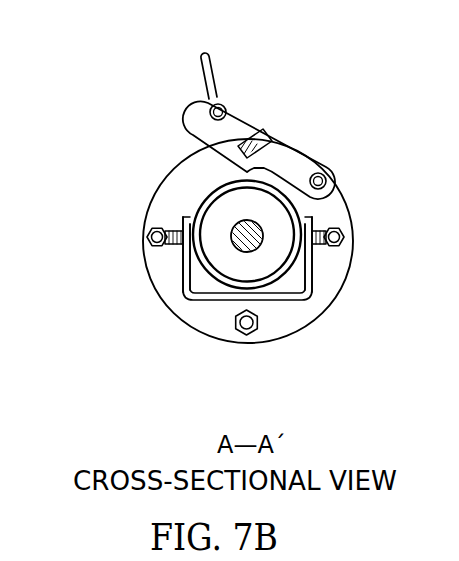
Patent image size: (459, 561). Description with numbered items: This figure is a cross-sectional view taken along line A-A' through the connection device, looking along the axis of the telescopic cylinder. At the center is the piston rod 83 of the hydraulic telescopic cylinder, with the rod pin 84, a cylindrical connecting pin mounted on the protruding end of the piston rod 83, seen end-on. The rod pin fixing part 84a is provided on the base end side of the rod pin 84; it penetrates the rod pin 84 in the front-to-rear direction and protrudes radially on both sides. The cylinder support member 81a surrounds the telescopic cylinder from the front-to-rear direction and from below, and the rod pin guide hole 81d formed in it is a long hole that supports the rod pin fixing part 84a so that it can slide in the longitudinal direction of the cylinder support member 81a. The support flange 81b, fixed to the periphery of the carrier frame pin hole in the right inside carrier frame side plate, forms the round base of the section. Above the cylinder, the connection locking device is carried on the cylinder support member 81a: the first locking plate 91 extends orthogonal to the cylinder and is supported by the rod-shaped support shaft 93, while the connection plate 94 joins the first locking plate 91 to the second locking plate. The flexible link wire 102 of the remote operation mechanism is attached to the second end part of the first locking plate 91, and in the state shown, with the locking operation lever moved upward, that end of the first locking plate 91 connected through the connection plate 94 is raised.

The link wire 102 is at (203, 73).
The first locking plate 91 is at (250, 126).
The connection plate 94 is at (253, 142).
The support shaft 93 is at (321, 168).
The rod pin fixing part 84a is at (320, 223).
The rod pin 84 is at (273, 260).
The piston rod 83 is at (250, 252).
The cylinder support member 81a is at (302, 259).
The rod pin guide hole 81d is at (185, 248).
The support flange 81b is at (192, 311).